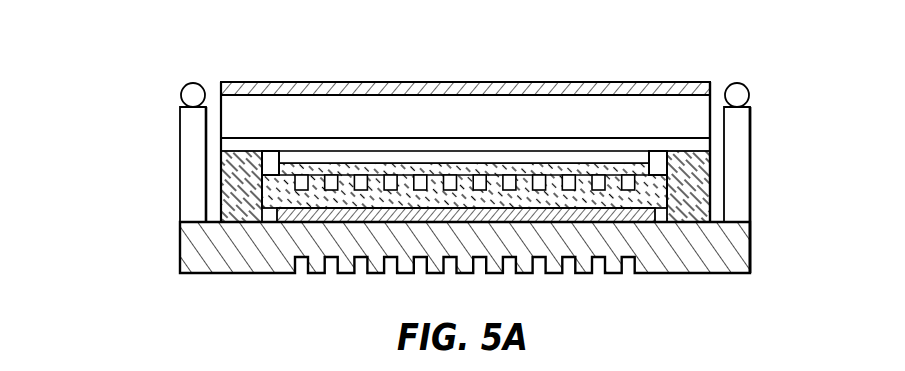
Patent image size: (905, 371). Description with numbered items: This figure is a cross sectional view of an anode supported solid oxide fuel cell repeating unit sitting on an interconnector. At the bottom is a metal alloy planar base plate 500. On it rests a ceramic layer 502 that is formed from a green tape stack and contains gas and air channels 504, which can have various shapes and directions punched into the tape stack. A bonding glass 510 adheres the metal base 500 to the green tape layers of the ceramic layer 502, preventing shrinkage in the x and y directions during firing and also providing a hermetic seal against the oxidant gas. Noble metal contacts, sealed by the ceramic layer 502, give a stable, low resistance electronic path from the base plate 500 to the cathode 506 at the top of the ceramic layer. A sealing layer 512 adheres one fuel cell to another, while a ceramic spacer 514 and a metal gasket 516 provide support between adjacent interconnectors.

The metal alloy planar base plate 500 is at (190, 252).
The ceramic layer 502 is at (227, 164).
The gas and air channels 504 is at (306, 185).
The cathode 506 is at (228, 145).
The bonding glass 510 is at (709, 210).
The sealing layer 512 is at (284, 81).
The ceramic spacer 514 is at (747, 122).
The metal gasket 516 is at (740, 84).